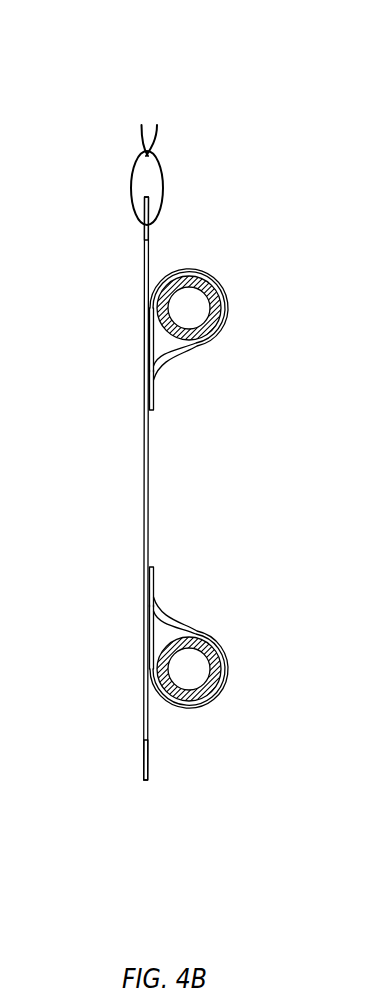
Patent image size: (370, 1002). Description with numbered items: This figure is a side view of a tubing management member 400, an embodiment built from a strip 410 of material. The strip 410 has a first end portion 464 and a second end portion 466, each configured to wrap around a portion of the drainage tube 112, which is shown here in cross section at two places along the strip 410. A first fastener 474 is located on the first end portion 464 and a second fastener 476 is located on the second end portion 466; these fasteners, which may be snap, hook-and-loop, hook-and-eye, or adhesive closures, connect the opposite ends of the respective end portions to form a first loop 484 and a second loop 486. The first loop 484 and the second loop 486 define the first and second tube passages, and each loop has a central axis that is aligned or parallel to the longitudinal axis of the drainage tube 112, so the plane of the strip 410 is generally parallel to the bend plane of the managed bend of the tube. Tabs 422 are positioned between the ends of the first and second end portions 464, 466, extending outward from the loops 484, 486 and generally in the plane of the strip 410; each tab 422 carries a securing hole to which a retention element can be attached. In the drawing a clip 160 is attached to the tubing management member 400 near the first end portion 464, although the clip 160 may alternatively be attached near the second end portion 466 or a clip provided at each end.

The tubing management member 400 is at (240, 65).
The strip 410 is at (149, 497).
The clip 160 is at (163, 165).
The tab 422 is at (152, 235).
The first loop 484 is at (159, 351).
The first end portion 464 is at (147, 347).
The first fastener 474 is at (168, 396).
The drainage tube 112 is at (215, 318).
The second loop 486 is at (174, 621).
The second end portion 466 is at (147, 628).
The second fastener 476 is at (165, 580).